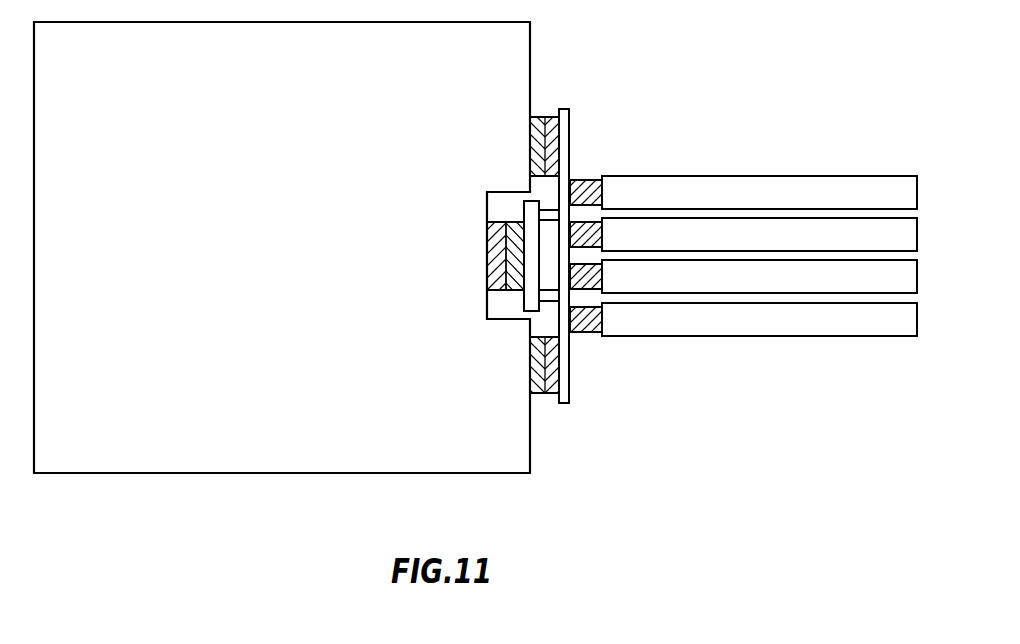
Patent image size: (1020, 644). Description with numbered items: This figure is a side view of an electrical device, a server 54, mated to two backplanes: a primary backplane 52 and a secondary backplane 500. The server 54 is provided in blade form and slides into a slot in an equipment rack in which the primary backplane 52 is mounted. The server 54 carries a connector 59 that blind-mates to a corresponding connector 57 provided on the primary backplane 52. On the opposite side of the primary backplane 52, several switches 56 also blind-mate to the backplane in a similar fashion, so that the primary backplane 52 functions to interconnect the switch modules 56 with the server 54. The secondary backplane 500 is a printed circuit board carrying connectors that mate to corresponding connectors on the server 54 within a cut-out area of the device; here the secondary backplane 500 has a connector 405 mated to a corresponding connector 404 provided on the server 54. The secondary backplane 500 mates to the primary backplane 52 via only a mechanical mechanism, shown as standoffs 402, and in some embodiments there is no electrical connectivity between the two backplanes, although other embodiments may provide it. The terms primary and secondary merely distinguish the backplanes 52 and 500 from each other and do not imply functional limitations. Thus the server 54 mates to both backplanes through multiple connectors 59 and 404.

The primary backplane 52 is at (597, 106).
The server 54 is at (302, 207).
The switch 56 is at (820, 205).
The connector 57 is at (552, 117).
The connector 59 is at (540, 117).
The standoffs 402 is at (551, 205).
The connector 404 is at (493, 264).
The connector 405 is at (492, 245).
The secondary backplane 500 is at (525, 301).